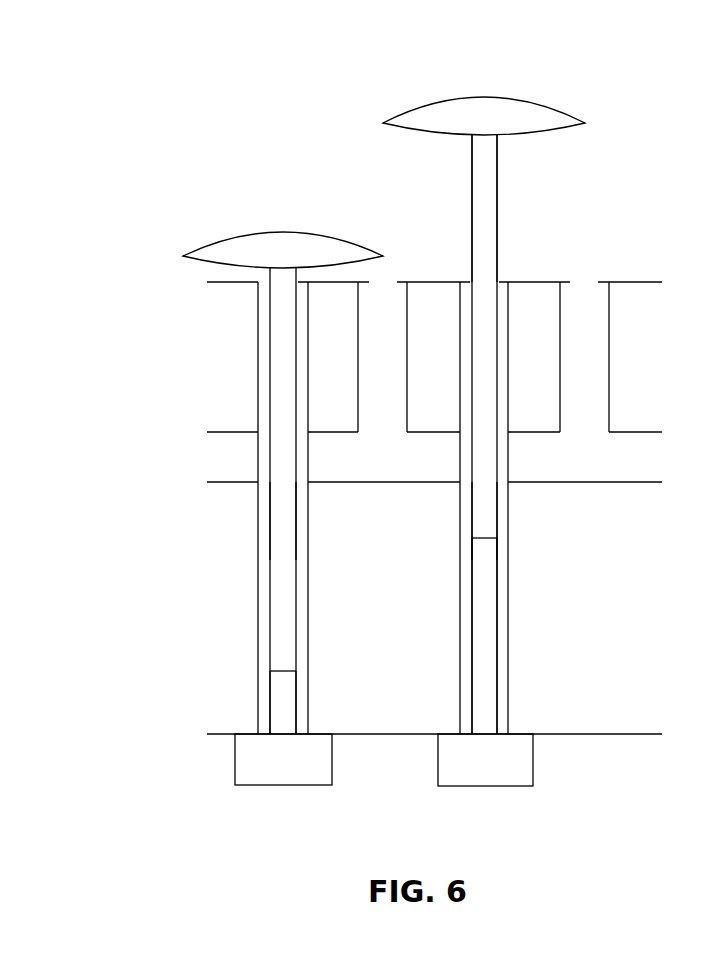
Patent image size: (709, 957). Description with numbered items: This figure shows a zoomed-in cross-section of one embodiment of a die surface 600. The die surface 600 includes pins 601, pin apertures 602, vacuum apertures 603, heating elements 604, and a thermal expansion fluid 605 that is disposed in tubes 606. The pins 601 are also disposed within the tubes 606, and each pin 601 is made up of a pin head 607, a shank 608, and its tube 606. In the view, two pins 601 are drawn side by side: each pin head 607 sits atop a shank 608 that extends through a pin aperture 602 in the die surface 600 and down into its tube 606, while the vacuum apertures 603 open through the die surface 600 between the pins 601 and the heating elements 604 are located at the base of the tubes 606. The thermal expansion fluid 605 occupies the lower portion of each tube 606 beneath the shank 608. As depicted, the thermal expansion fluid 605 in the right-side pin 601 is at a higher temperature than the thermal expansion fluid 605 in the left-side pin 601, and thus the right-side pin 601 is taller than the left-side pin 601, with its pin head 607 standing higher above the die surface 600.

The die surface 600 is at (177, 108).
The pins 601 is at (412, 168).
The pin apertures 602 is at (463, 273).
The vacuum apertures 603 is at (583, 272).
The heating elements 604 is at (261, 772).
The thermal expansion fluid 605 is at (287, 705).
The tubes 606 is at (308, 523).
The pin heads 607 is at (260, 262).
The shanks 608 is at (497, 170).